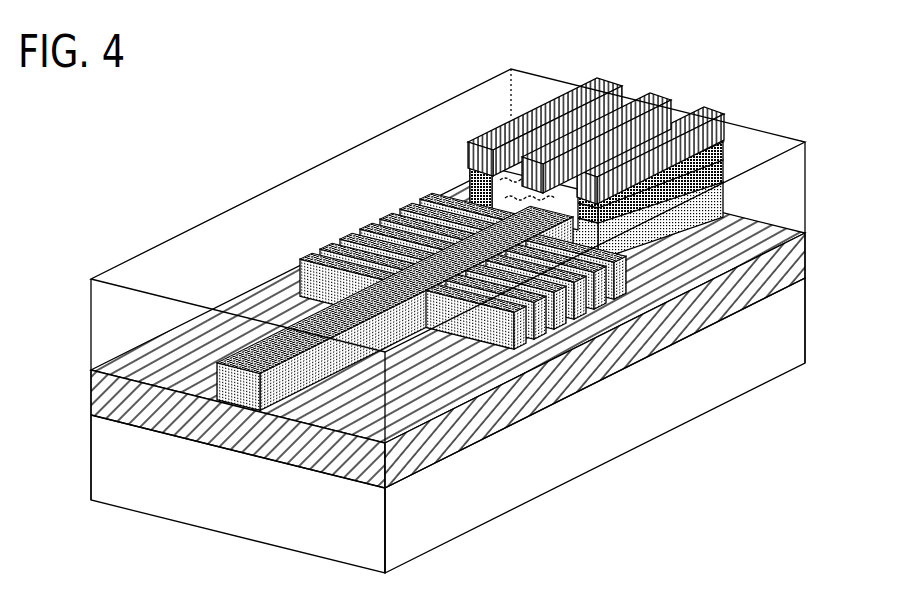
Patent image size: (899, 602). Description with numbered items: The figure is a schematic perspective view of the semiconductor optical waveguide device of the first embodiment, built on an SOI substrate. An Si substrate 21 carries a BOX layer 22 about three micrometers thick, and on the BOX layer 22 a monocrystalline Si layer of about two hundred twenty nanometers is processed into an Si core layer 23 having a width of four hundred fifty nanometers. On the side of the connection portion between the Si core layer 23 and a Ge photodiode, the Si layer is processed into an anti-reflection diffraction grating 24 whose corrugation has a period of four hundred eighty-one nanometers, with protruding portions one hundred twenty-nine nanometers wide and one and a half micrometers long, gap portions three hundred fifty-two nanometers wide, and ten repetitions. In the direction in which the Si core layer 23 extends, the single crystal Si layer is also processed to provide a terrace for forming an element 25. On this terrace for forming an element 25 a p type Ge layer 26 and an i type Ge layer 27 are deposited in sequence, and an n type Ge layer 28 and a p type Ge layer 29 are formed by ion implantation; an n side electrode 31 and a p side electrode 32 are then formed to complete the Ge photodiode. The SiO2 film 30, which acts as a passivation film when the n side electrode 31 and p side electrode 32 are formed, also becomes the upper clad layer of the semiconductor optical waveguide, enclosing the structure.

The Si substrate 21 is at (806, 319).
The BOX layer 22 is at (806, 264).
The Si core layer 23 is at (250, 312).
The anti-reflection diffraction grating 24 is at (401, 301).
The terrace for forming an element 25 is at (723, 203).
The p type Ge layer 26 is at (723, 175).
The i type Ge layer 27 is at (492, 196).
The n type Ge layer 28 is at (468, 163).
The p type Ge layer 29 is at (723, 150).
The SiO2 film 30 is at (806, 182).
The n side electrode 31 is at (652, 97).
The p side electrode 32 is at (597, 82).